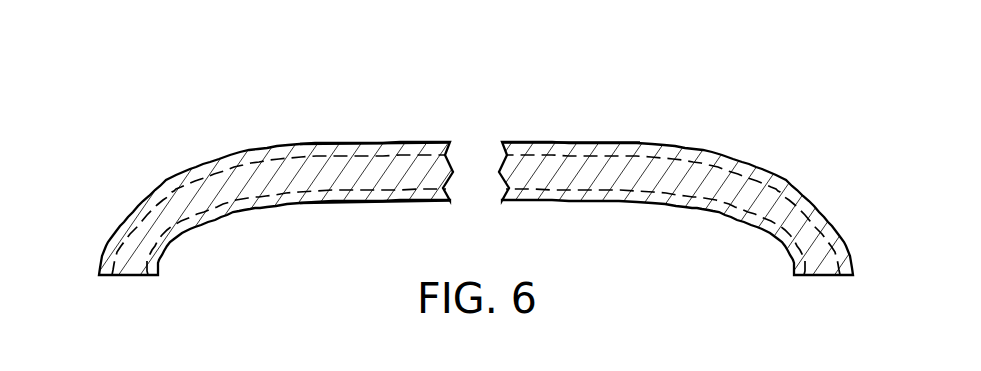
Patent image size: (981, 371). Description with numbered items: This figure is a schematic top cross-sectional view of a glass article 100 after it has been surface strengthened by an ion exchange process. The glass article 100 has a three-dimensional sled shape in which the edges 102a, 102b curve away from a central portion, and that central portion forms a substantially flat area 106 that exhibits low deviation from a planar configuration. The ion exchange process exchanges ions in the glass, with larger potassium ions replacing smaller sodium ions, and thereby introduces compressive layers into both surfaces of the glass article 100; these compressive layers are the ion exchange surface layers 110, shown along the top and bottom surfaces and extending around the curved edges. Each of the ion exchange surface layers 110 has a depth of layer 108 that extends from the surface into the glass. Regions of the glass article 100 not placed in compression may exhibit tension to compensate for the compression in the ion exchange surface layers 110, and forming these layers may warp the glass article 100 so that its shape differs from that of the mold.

The glass article 100 is at (478, 156).
The edge 102a is at (127, 220).
The edge 102b is at (827, 212).
The substantially flat area 106 is at (592, 142).
The depth of layer 108 is at (423, 186).
The ion exchange surface layers 110 is at (338, 142).